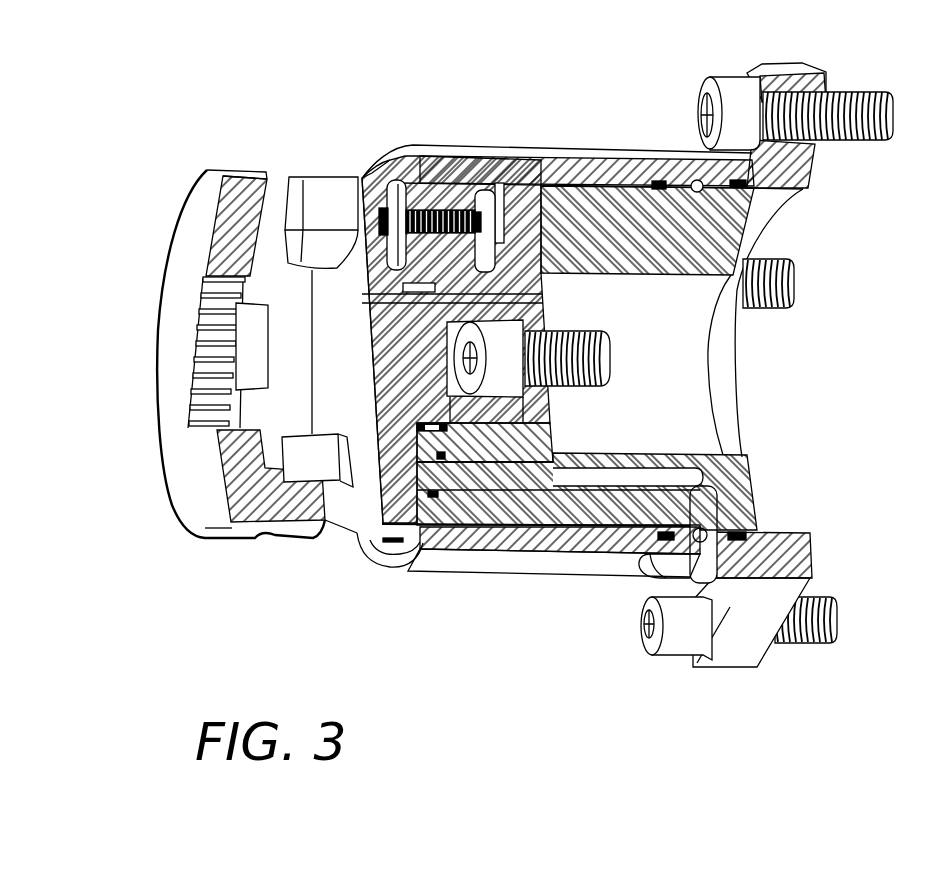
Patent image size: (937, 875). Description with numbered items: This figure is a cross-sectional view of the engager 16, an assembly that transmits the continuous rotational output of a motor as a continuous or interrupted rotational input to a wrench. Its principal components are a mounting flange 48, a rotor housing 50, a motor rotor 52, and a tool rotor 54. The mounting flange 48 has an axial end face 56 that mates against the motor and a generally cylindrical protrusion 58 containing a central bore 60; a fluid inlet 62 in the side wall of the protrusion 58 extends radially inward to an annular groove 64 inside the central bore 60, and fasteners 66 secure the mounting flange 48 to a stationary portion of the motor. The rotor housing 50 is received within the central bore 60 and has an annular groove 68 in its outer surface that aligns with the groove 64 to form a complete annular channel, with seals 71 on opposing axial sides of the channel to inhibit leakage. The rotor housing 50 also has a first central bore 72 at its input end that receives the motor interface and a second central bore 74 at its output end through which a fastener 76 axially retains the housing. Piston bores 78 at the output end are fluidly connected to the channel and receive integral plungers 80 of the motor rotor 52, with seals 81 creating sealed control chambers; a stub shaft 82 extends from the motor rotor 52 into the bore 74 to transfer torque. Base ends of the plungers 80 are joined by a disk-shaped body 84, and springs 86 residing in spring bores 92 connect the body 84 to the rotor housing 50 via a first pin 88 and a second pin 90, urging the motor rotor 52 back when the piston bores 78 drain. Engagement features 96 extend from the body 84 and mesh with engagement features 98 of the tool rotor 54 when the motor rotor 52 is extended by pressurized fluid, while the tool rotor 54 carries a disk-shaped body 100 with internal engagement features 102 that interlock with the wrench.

The engager 16 is at (126, 186).
The mounting flange 48 is at (578, 170).
The rotor housing 50 is at (520, 165).
The motor rotor 52 is at (336, 160).
The tool rotor 54 is at (262, 172).
The axial end face 56 is at (815, 165).
The protrusion 58 is at (556, 565).
The central bore 60 is at (727, 455).
The fluid inlet 62 is at (710, 578).
The annular groove 64 is at (640, 567).
The fasteners 66 is at (732, 88).
The annular groove 68 is at (643, 596).
The seals 71 is at (668, 176).
The first central bore 72 is at (687, 452).
The second central bore 74 is at (550, 425).
The fastener 76 is at (520, 372).
The piston bores 78 is at (513, 507).
The plungers 80 is at (548, 500).
The seals 81 is at (472, 512).
The stub shaft 82 is at (480, 445).
The disk-shaped body 84 is at (358, 160).
The springs 86 is at (463, 162).
The first pin 88 is at (400, 162).
The second pin 90 is at (500, 162).
The spring bores 92 is at (440, 165).
The engagement features 96 is at (345, 216).
The engagement features 98 is at (263, 366).
The disk-shaped body 100 is at (217, 506).
The internal engagement features 102 is at (190, 388).